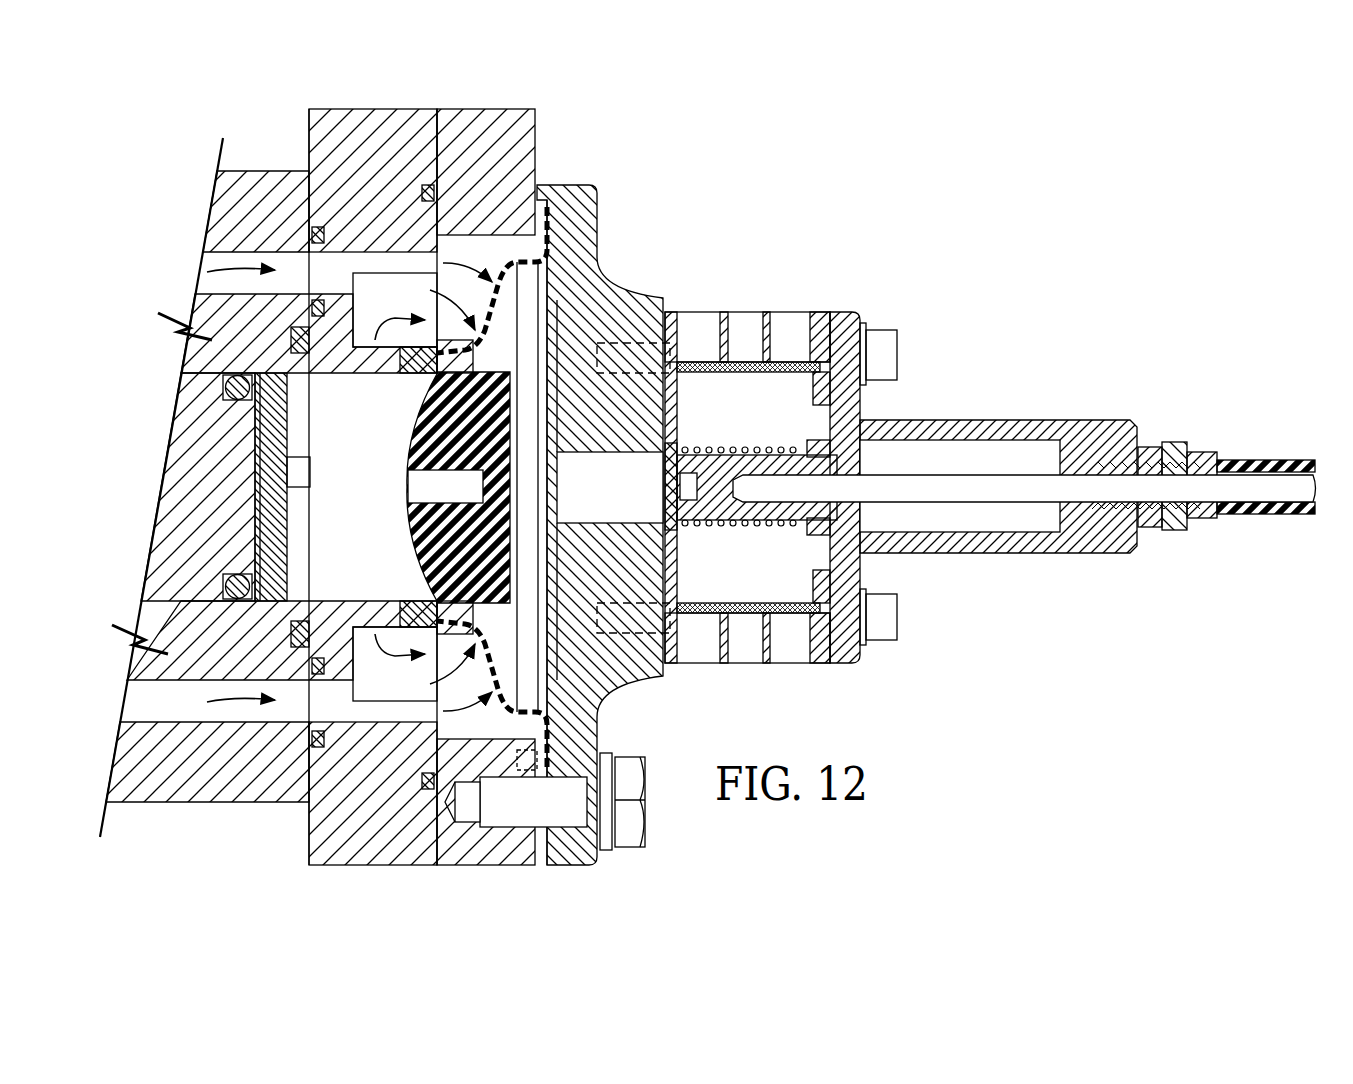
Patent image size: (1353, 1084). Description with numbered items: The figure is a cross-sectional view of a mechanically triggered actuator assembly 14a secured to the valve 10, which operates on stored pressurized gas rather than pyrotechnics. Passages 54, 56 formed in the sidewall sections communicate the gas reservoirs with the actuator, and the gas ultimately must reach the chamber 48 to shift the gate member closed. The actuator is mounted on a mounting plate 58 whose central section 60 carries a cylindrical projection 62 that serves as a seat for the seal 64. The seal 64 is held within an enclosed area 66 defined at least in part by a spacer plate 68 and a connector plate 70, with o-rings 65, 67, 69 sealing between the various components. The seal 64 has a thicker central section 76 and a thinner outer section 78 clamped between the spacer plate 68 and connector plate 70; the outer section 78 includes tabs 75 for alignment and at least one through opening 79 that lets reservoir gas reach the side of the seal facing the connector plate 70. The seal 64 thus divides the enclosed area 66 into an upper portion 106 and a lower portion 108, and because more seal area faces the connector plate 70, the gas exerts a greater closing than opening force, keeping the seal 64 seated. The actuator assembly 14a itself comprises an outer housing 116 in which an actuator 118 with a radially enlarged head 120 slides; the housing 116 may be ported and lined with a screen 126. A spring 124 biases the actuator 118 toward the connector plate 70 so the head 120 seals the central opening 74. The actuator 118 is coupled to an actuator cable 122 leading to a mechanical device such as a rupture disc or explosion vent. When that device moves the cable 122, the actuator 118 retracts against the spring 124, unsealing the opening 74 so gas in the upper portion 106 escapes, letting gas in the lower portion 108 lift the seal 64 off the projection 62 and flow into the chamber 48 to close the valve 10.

The valve 10 is at (556, 103).
The actuator assembly 14a is at (903, 272).
The chamber 48 is at (300, 440).
The passage 54 is at (278, 267).
The passage 56 is at (182, 707).
The mounting plate 58 is at (377, 858).
The central section 60 is at (430, 307).
The cylindrical projection 62 is at (357, 640).
The seal 64 is at (415, 522).
The o-ring 65 is at (423, 783).
The enclosed area 66 is at (470, 253).
The o-ring 67 is at (310, 743).
The spacer plate 68 is at (487, 860).
The o-ring 69 is at (302, 345).
The connector plate 70 is at (577, 857).
The central opening 74 is at (637, 467).
The tab 75 is at (530, 750).
The central section 76 is at (415, 453).
The outer section 78 is at (498, 250).
The through opening 79 is at (440, 670).
The upper portion 106 is at (527, 282).
The lower portion 108 is at (437, 263).
The outer housing 116 is at (832, 318).
The actuator 118 is at (720, 505).
The head 120 is at (680, 520).
The actuator cable 122 is at (970, 488).
The spring 124 is at (773, 527).
The screen 126 is at (748, 362).